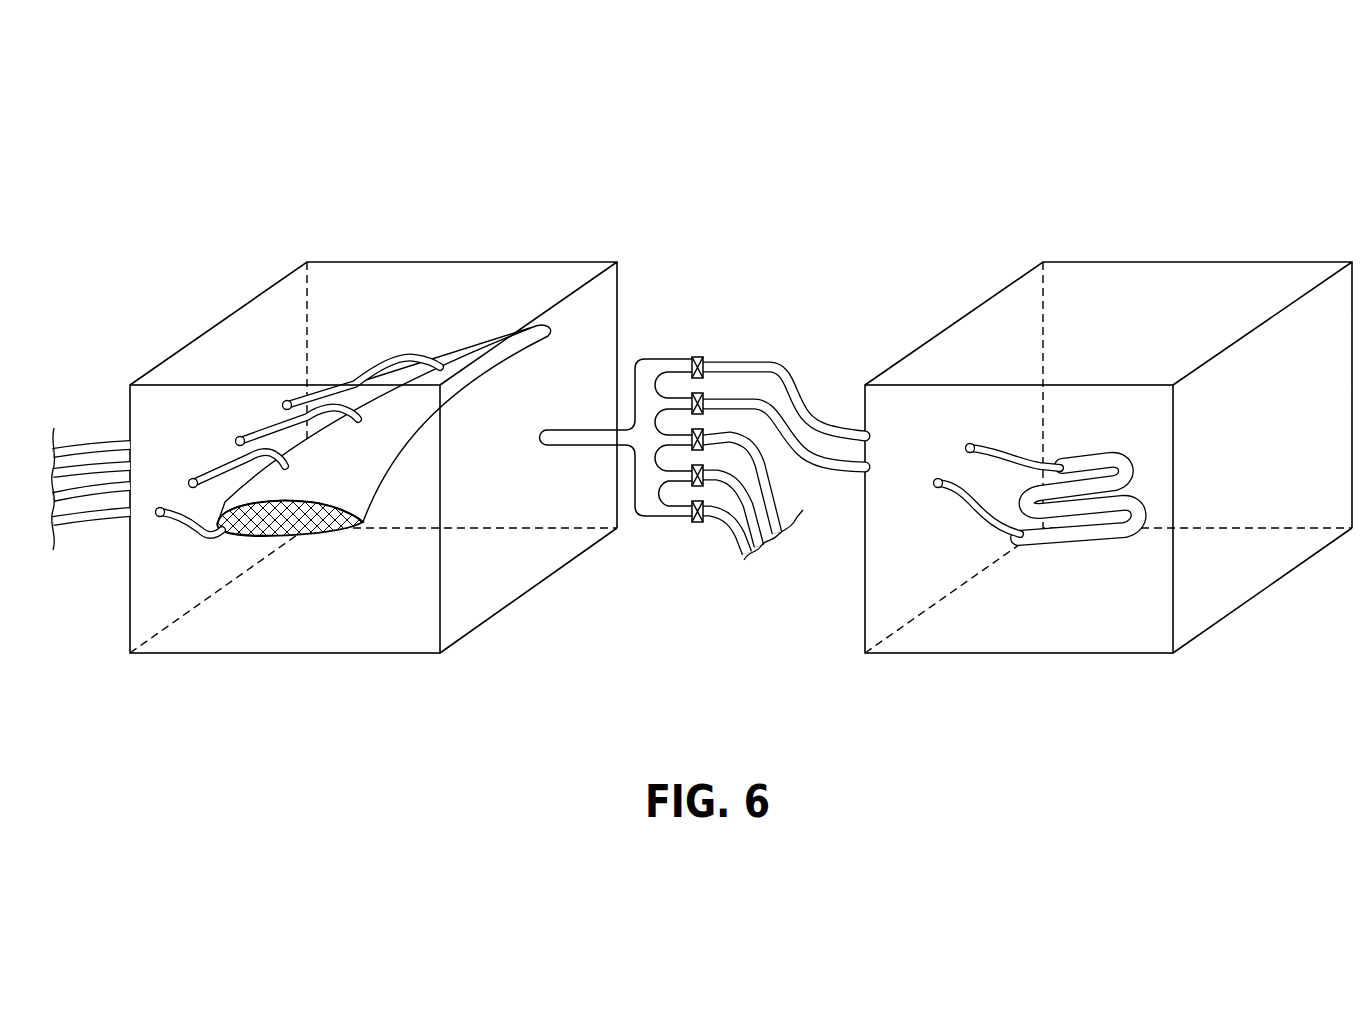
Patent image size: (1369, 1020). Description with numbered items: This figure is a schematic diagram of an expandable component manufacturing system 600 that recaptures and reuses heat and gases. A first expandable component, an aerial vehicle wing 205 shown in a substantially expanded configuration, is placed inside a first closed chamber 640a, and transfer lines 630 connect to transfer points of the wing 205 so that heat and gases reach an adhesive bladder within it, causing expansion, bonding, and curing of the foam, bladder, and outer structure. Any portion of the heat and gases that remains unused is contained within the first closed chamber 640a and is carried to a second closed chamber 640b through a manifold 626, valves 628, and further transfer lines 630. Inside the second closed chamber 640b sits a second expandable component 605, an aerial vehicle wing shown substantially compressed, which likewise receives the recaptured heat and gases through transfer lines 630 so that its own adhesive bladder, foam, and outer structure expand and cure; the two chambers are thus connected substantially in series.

The expandable component manufacturing system 600 is at (1170, 103).
The first closed chamber 640a is at (365, 262).
The second closed chamber 640b is at (1140, 261).
The aerial vehicle wing 205 is at (362, 472).
The transfer lines 630 is at (83, 445).
The manifold 626 is at (669, 358).
The valves 628 is at (697, 356).
The second expandable component 605 is at (1054, 546).